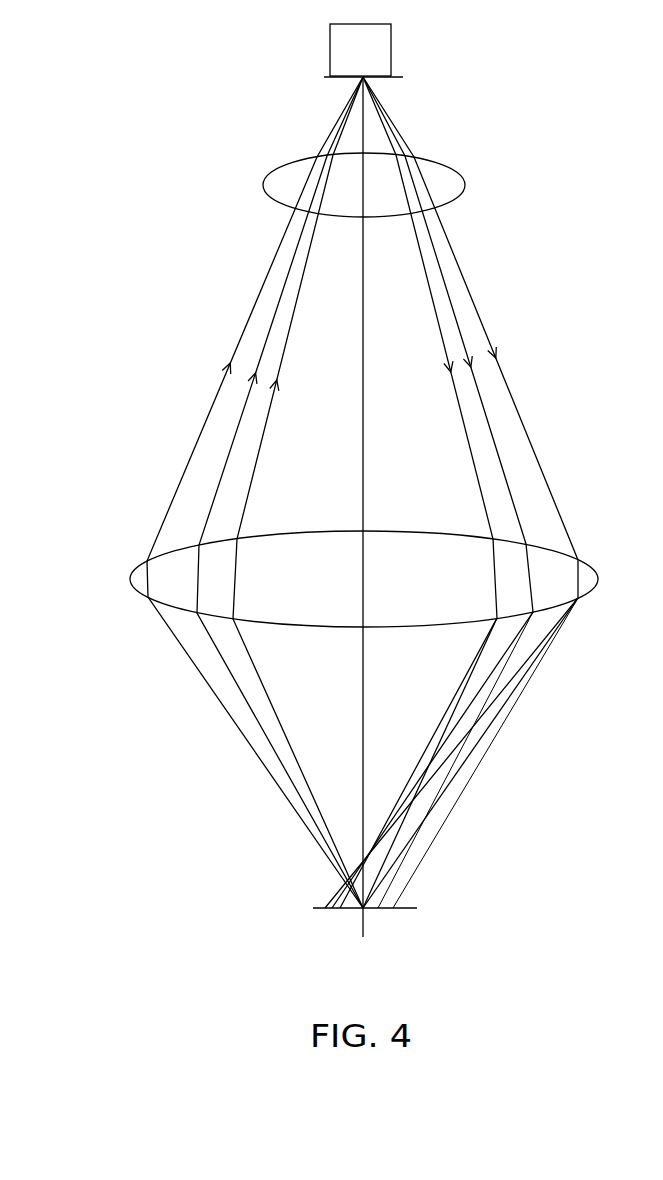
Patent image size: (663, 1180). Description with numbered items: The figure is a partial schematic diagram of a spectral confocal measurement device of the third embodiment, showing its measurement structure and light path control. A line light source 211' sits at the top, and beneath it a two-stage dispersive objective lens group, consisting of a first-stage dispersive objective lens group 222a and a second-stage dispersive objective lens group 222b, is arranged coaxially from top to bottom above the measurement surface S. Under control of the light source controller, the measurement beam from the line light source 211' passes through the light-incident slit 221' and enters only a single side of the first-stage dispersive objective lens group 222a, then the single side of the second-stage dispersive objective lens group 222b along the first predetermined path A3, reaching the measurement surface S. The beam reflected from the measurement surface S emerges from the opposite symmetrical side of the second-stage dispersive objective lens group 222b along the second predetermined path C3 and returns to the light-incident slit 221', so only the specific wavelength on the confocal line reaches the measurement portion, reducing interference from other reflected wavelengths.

The line light source 211' is at (311, 40).
The light-incident slit 221' is at (414, 48).
The first-stage dispersive objective lens group 222a is at (280, 185).
The second-stage dispersive objective lens group 222b is at (145, 575).
The second predetermined path C3 is at (255, 492).
The first predetermined path A3 is at (451, 492).
The measurement surface S is at (378, 912).